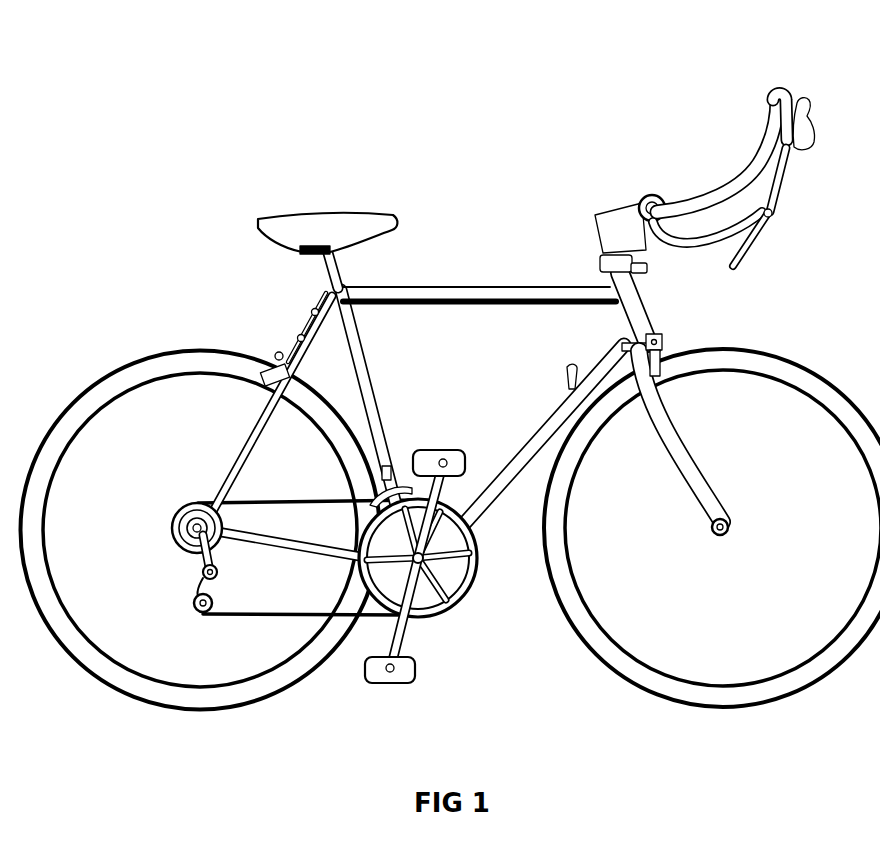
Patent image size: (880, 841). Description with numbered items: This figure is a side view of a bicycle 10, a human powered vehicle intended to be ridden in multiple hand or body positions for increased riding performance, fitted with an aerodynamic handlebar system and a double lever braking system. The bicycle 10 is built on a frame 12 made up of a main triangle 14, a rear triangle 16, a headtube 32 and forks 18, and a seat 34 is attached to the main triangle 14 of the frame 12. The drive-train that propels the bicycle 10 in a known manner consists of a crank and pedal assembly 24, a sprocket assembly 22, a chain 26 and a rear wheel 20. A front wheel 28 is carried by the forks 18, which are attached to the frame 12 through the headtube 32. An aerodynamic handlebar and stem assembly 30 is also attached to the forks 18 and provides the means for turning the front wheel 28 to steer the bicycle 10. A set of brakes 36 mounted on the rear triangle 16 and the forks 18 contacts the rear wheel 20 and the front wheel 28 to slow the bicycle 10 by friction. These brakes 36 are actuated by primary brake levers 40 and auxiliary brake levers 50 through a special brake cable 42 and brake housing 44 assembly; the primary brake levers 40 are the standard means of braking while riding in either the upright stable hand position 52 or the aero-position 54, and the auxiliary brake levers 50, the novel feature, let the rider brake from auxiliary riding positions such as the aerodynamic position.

The bicycle 10 is at (505, 100).
The frame 12 is at (460, 280).
The main triangle 14 is at (531, 286).
The rear triangle 16 is at (230, 462).
The forks 18 is at (682, 460).
The rear wheel 20 is at (125, 378).
The sprocket assembly 22 is at (172, 540).
The crank and pedal assembly 24 is at (412, 634).
The chain 26 is at (367, 617).
The front wheel 28 is at (803, 383).
The aerodynamic handlebar and stem assembly 30 is at (646, 186).
The headtube 32 is at (625, 323).
The seat 34 is at (317, 223).
The brakes 36 is at (270, 363).
The primary brake levers 40 is at (733, 262).
The brake cable 42 is at (796, 205).
The brake housing 44 is at (307, 325).
The auxiliary brake levers 50 is at (807, 133).
The upright stable hand position 52 is at (688, 202).
The aero-position 54 is at (765, 105).